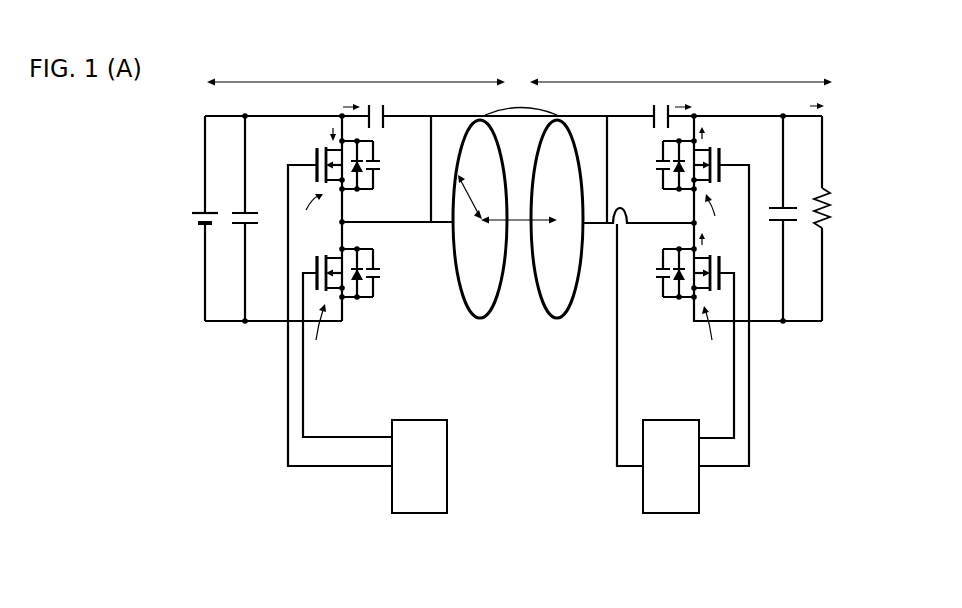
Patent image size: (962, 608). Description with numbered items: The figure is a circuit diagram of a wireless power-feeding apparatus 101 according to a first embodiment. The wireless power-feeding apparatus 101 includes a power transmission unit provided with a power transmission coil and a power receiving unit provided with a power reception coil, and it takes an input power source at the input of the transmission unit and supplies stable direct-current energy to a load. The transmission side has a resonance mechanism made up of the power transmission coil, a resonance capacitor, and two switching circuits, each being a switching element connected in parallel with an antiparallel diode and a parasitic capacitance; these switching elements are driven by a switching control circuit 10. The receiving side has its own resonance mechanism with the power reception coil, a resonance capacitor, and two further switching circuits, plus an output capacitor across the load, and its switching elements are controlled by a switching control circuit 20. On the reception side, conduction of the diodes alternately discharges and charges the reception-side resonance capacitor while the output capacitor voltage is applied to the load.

The wireless power-feeding apparatus 101 is at (840, 35).
The switching control circuit 10 is at (425, 513).
The switching control circuit 20 is at (672, 513).